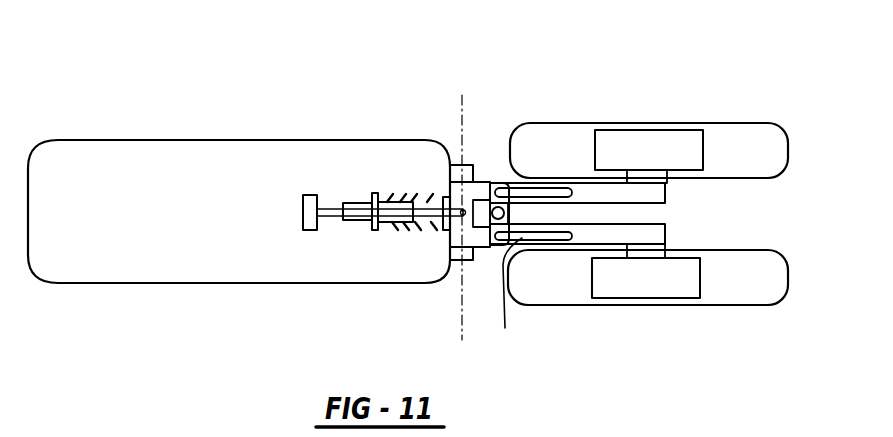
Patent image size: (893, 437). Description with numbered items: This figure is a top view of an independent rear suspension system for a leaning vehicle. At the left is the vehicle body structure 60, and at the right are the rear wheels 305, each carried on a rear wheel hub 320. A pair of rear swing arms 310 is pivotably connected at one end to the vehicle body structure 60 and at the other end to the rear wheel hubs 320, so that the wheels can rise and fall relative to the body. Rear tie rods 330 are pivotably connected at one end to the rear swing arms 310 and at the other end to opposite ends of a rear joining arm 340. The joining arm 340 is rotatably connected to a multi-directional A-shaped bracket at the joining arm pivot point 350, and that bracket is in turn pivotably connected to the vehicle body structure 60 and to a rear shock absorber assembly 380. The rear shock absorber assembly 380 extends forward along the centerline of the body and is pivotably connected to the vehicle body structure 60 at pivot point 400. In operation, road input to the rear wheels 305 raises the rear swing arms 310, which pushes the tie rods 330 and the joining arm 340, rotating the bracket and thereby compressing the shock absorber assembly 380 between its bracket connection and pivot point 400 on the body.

The vehicle body structure 60 is at (44, 144).
The rear wheels 305 is at (762, 135).
The rear swing arms 310 is at (656, 241).
The rear wheel hubs 320 is at (627, 131).
The rear tie rods 330 is at (506, 296).
The rear joining arm 340 is at (505, 190).
The joining arm pivot point 350 is at (487, 182).
The rear shock absorber assembly 380 is at (418, 192).
The pivot point 400 is at (324, 208).